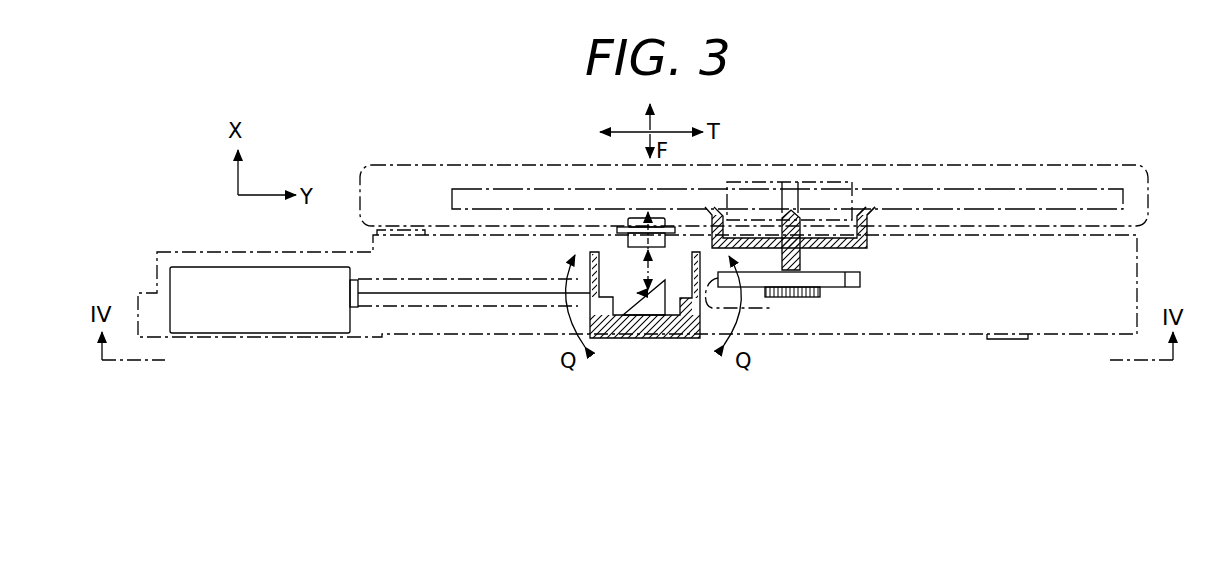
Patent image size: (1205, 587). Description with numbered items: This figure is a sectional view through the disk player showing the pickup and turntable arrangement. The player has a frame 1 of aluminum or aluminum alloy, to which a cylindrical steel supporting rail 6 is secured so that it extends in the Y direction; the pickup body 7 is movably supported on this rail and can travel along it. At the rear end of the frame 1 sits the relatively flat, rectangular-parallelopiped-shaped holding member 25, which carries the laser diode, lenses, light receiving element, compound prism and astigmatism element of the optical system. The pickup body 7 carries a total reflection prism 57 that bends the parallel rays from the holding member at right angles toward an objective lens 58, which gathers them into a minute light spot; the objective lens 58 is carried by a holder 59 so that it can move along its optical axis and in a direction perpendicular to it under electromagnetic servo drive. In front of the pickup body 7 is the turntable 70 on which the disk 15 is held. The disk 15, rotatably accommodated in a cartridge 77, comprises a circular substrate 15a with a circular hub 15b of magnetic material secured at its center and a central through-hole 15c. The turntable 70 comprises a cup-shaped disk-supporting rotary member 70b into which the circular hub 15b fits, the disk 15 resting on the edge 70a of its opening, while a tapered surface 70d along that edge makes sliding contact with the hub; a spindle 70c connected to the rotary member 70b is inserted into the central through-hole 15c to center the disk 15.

The frame 1 is at (436, 226).
The supporting rail 6 is at (452, 305).
The pickup body 7 is at (620, 344).
The disk 15 is at (1015, 186).
The circular substrate 15a is at (1063, 198).
The circular hub 15b is at (828, 183).
The central through-hole 15c is at (790, 186).
The holding member 25 is at (203, 262).
The total reflection prism 57 is at (651, 312).
The objective lens 58 is at (666, 218).
The holder 59 is at (617, 227).
The turntable 70 is at (897, 222).
The edge of the opening 70a is at (877, 205).
The cup-shaped disk-supporting rotary member 70b is at (872, 208).
The spindle 70c is at (800, 258).
The tapered surface 70d is at (866, 210).
The cartridge 77 is at (1153, 200).